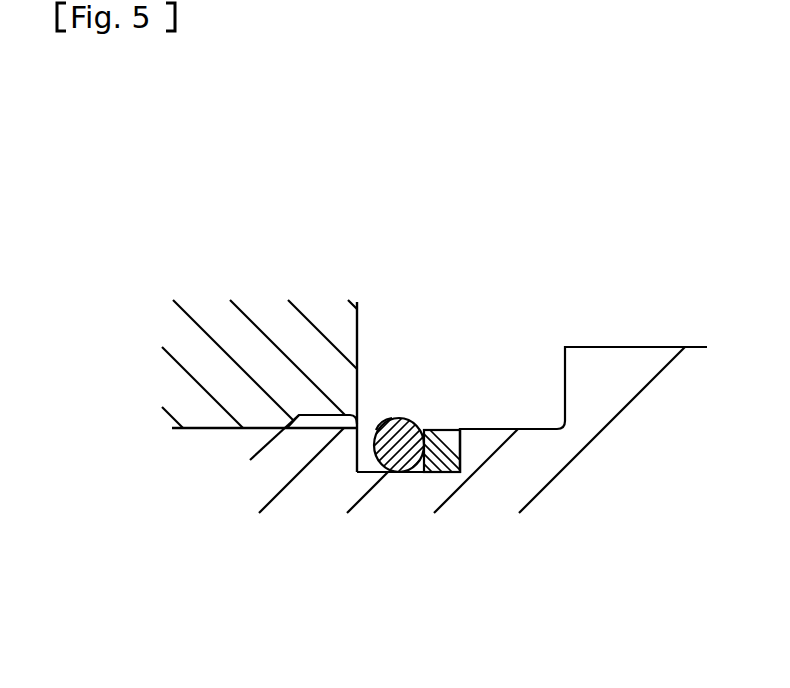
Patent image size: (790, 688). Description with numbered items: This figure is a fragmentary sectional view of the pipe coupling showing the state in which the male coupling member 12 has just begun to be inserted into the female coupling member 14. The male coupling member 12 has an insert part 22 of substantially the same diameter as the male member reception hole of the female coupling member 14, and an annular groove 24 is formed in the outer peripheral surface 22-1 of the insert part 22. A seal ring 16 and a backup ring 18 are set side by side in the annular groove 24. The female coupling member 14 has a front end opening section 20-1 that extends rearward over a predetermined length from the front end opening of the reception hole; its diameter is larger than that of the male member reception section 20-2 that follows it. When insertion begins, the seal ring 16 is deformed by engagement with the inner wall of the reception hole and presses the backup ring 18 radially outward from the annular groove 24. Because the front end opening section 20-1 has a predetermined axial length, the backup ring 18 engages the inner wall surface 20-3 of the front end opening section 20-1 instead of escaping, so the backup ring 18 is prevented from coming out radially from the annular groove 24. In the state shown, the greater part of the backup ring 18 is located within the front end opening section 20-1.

The male coupling member 12 is at (688, 222).
The female coupling member 14 is at (275, 222).
The seal ring 16 is at (413, 419).
The backup ring 18 is at (446, 429).
The front end opening section 20-1 is at (368, 436).
The male member reception section 20-2 is at (200, 428).
The inner wall surface 20-3 is at (305, 418).
The insert part 22 is at (480, 429).
The outer peripheral surface 22-1 is at (527, 429).
The annular groove 24 is at (375, 428).